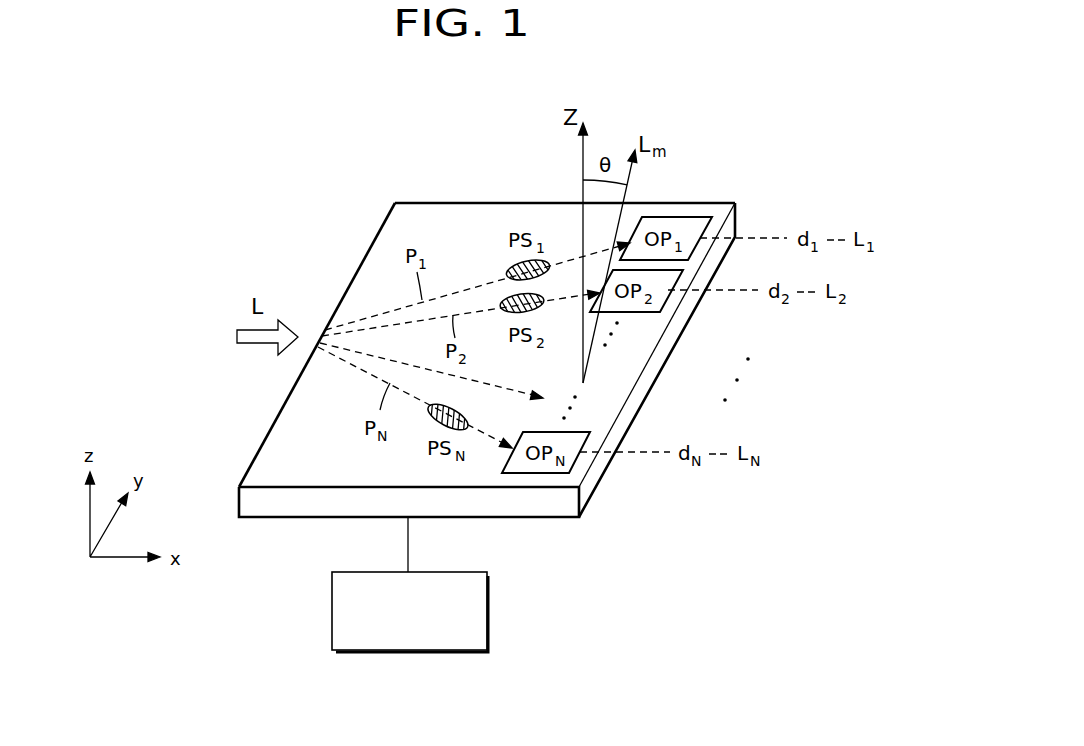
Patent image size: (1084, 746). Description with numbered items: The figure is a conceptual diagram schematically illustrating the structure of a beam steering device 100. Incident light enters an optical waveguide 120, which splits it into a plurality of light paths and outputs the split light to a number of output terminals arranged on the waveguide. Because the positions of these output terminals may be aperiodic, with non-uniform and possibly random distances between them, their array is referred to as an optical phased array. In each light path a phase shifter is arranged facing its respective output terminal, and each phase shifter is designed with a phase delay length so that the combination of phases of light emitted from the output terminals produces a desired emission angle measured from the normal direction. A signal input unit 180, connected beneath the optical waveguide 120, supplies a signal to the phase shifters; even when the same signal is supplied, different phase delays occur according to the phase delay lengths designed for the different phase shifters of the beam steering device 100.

The beam steering device 100 is at (798, 158).
The optical waveguide 120 is at (258, 505).
The signal input unit 180 is at (438, 572).